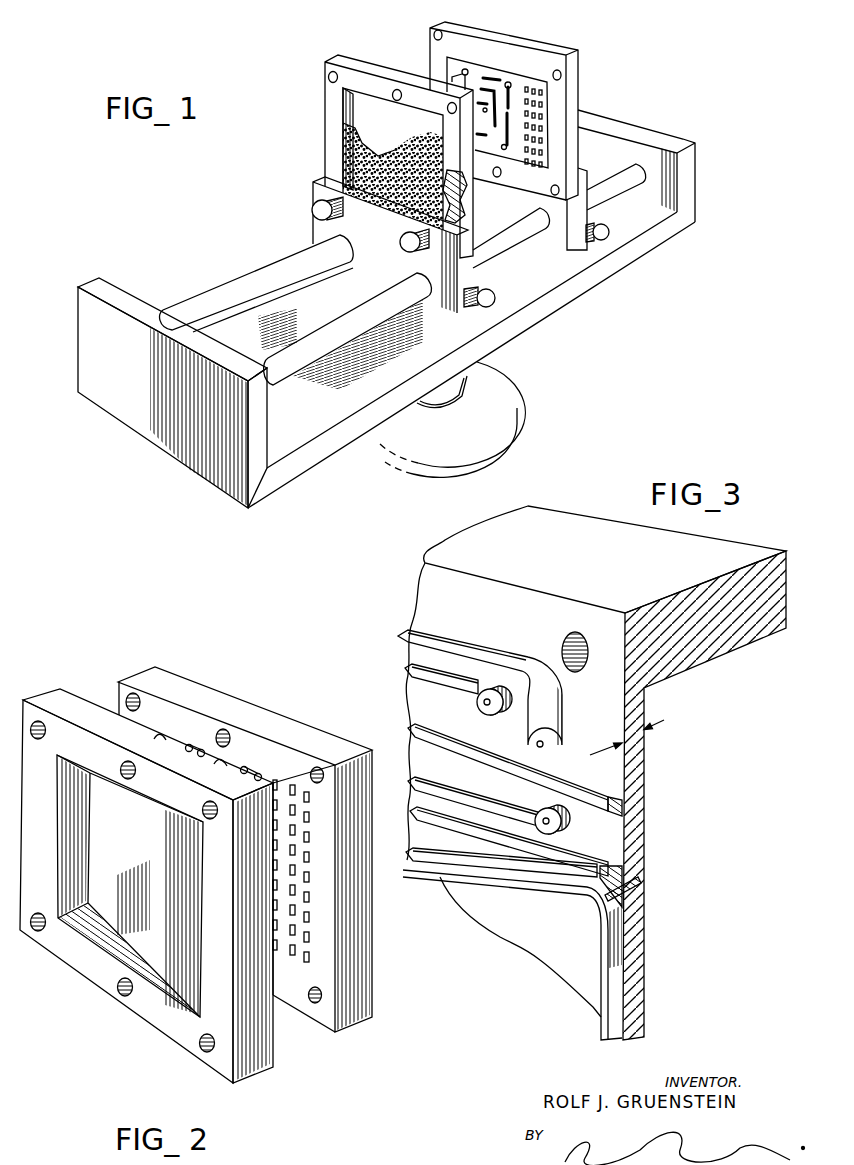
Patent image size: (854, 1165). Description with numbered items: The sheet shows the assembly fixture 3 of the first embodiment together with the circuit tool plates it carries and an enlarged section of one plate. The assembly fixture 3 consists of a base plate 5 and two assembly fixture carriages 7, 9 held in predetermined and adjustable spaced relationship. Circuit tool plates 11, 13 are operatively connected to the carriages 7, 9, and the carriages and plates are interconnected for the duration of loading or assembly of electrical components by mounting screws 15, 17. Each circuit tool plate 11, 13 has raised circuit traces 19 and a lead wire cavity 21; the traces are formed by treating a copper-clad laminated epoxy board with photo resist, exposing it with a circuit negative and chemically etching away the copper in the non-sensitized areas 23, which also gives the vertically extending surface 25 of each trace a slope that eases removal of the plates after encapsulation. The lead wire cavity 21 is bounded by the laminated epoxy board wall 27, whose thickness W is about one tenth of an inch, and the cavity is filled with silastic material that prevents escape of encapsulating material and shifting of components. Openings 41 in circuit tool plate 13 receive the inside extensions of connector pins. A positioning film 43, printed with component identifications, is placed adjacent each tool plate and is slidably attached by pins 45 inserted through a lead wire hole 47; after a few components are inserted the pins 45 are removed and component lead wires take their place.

In FIG. 1, the assembly fixture 3 is at (386, 271).
In FIG. 1, the base plate 5 is at (311, 457).
In FIG. 1, the assembly fixture carriage 7 is at (432, 303).
In FIG. 1, the assembly fixture carriage 9 is at (560, 230).
In FIG. 1, the circuit tool plate 11 is at (327, 78).
In FIG. 2, the circuit tool plate 11 is at (146, 891).
In FIG. 1, the circuit tool plate 13 is at (430, 58).
In FIG. 2, the circuit tool plate 13 is at (342, 891).
In FIG. 1, the mounting screw 15 is at (318, 210).
In FIG. 1, the mounting screw 17 is at (407, 240).
In FIG. 2, the raised circuit traces 19 is at (250, 768).
In FIG. 3, the raised circuit traces 19 is at (412, 737).
In FIG. 2, the lead wire cavity 21 is at (117, 947).
In FIG. 3, the lead wire cavity 21 is at (655, 697).
In FIG. 2, the non-sensitized areas 23 is at (245, 715).
In FIG. 3, the non-sensitized areas 23 is at (573, 773).
In FIG. 3, the vertically extending surface 25 is at (402, 637).
In FIG. 2, the laminated epoxy board wall 27 is at (149, 866).
In FIG. 3, the laminated epoxy board wall 27 is at (640, 950).
In FIG. 2, the openings 41 is at (307, 818).
In FIG. 1, the positioning film 43 is at (521, 80).
In FIG. 1, the pins 45 is at (430, 122).
In FIG. 3, the lead wire hole 47 is at (488, 699).